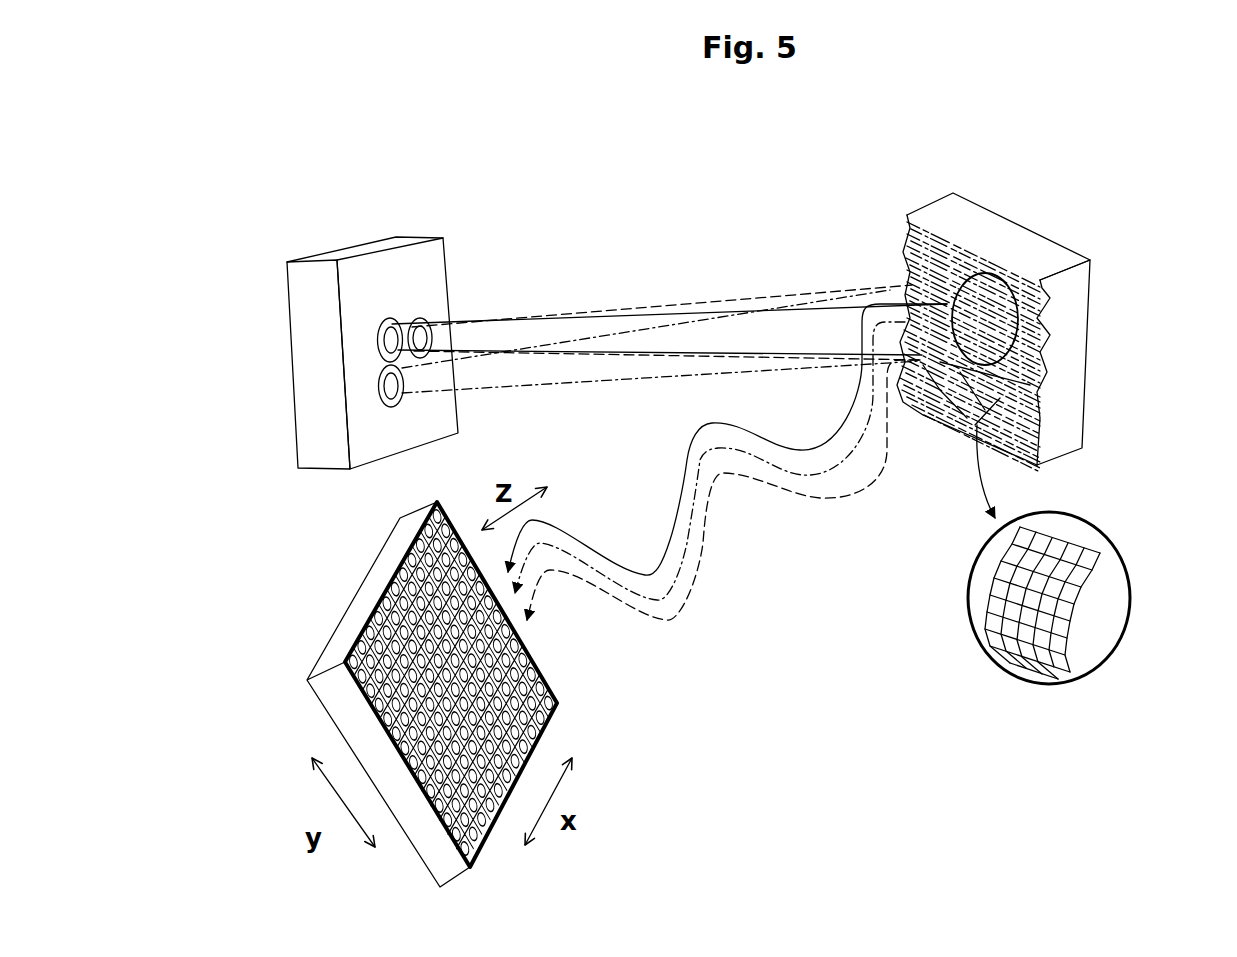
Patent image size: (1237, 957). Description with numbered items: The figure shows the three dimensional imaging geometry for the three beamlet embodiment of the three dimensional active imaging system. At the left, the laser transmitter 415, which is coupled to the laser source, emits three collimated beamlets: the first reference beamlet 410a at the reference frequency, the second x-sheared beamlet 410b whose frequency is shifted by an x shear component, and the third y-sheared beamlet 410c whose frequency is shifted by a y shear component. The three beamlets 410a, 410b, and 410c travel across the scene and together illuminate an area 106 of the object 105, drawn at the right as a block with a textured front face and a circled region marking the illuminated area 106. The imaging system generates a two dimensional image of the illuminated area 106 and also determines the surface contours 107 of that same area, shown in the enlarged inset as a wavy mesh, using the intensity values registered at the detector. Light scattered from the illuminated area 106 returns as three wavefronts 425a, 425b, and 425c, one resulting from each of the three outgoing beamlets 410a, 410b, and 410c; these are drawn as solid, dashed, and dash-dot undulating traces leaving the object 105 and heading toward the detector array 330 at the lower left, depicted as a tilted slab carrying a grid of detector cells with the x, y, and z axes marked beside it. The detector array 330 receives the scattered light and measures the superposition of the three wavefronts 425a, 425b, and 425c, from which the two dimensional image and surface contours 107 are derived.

The laser transmitter 415 is at (303, 280).
The first reference beamlet 410a is at (402, 323).
The second x-sheared beamlet 410b is at (698, 302).
The third y-sheared beamlet 410c is at (488, 388).
The object 105 is at (1075, 288).
The illuminated area 106 is at (1018, 316).
The surface contours 107 is at (1072, 543).
The detector array 330 is at (320, 662).
The first wavefront 425a is at (665, 543).
The second wavefront 425b is at (702, 540).
The third wavefront 425c is at (682, 545).